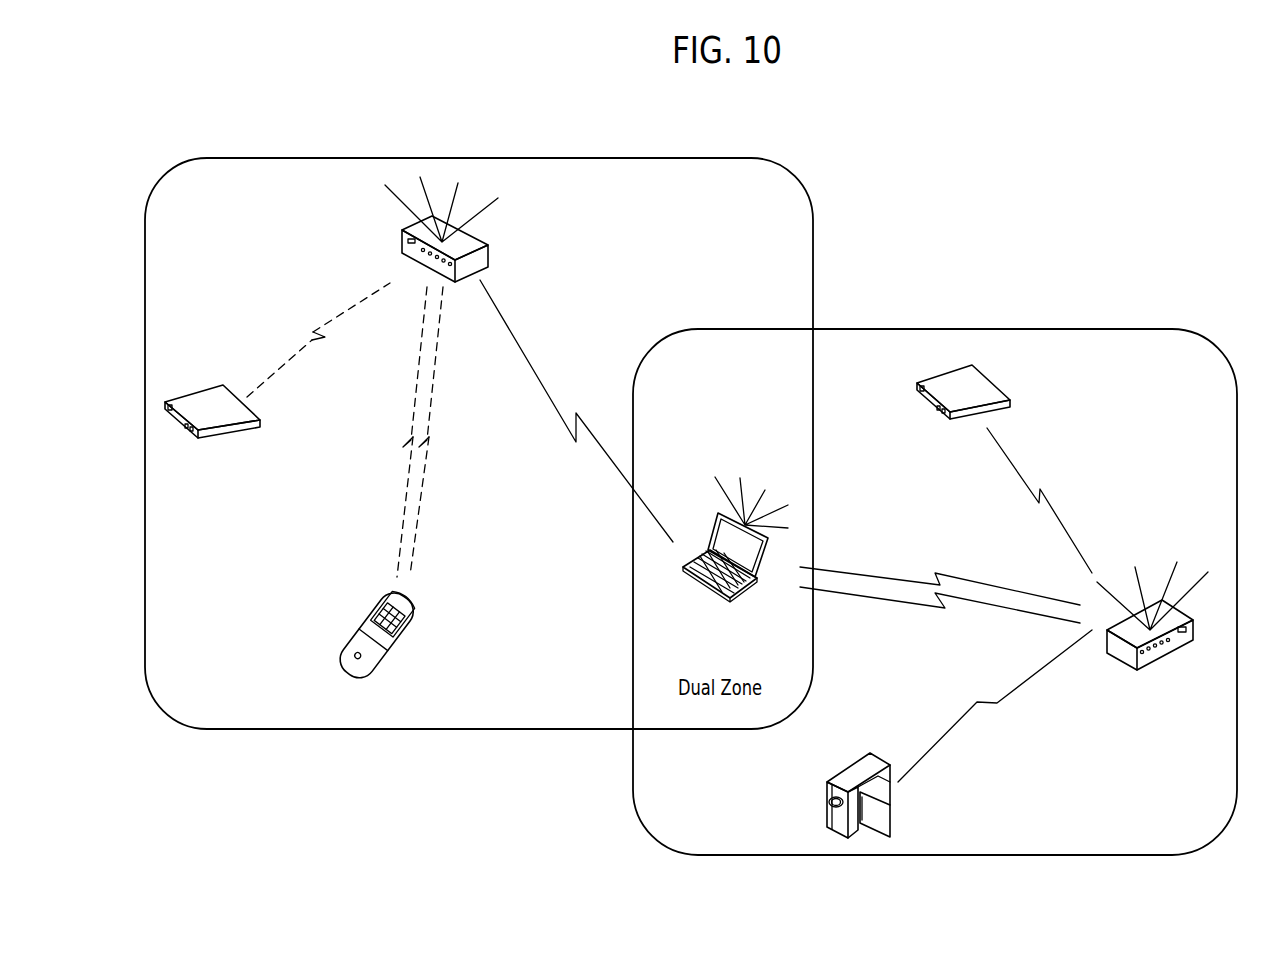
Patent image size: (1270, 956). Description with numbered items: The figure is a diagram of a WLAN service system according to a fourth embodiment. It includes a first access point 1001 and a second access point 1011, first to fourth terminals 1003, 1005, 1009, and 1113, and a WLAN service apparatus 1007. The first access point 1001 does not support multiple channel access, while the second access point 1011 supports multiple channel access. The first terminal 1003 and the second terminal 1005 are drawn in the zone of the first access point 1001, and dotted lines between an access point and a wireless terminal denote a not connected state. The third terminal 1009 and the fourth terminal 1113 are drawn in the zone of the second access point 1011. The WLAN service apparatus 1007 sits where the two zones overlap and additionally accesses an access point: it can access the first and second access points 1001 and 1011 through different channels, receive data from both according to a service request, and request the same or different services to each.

The first access point 1001 is at (488, 258).
The first terminal 1003 is at (222, 440).
The second terminal 1005 is at (353, 643).
The WLAN service apparatus 1007 is at (718, 595).
The third terminal 1009 is at (843, 773).
The second access point 1011 is at (1155, 660).
The fourth terminal 1113 is at (1000, 390).